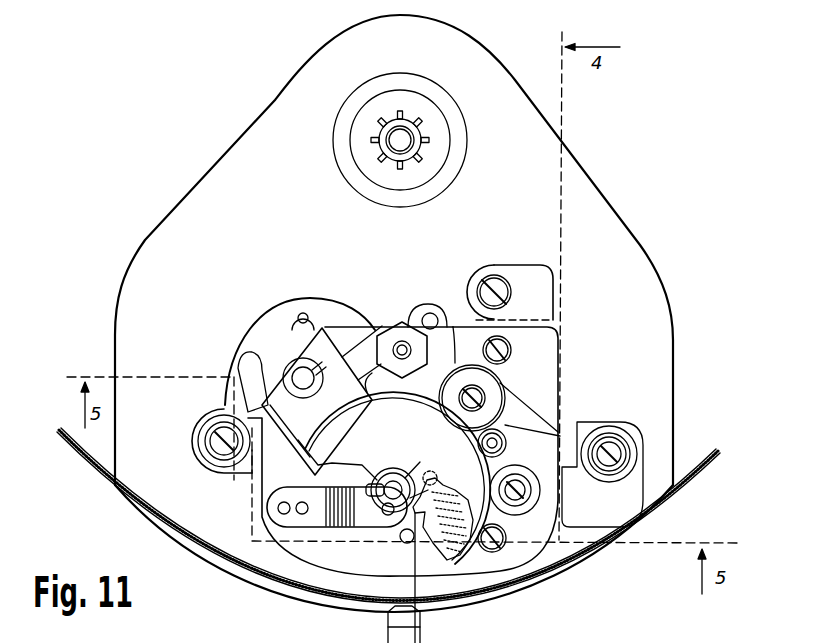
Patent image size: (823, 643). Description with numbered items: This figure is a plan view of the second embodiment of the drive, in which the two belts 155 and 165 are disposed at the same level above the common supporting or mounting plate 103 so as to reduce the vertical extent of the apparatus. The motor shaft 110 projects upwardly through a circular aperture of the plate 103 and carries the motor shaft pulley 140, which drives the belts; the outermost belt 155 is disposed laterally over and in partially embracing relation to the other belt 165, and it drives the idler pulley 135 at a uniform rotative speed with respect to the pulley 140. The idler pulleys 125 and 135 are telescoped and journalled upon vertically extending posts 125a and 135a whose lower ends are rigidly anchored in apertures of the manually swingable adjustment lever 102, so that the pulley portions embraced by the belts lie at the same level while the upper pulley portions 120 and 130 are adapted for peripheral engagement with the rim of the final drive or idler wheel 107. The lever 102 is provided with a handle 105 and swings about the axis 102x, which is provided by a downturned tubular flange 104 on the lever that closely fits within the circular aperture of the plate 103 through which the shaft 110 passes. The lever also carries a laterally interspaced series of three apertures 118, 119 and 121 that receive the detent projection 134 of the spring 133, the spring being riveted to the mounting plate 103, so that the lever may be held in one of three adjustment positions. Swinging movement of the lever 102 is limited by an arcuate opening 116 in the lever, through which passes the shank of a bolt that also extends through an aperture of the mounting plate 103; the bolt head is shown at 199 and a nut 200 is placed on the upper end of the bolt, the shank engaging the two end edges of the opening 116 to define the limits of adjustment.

The bolt head 199 is at (397, 345).
The nut 200 is at (382, 340).
The adjustment lever 102 is at (427, 375).
The arcuate opening 116 is at (426, 326).
The mounting plate 103 is at (522, 363).
The idler pulley 125 is at (456, 332).
The post 125a is at (478, 393).
The upper pulley portion 120 is at (482, 396).
The belt 165 is at (505, 420).
The belt 155 is at (522, 440).
The motor shaft pulley 140 is at (565, 432).
The downturned tubular flange 104 is at (600, 422).
The motor shaft 110 is at (377, 450).
The axis of swinging 102x is at (372, 482).
The final drive or idler wheel 107 is at (300, 460).
The aperture 118 is at (368, 475).
The aperture 119 is at (340, 521).
The detent projection 134 is at (383, 503).
The spring 133 is at (388, 512).
The aperture 121 is at (401, 540).
The idler pulley 135 is at (533, 487).
The post 135a is at (525, 500).
The upper pulley portion 130 is at (560, 527).
The handle 105 is at (420, 622).